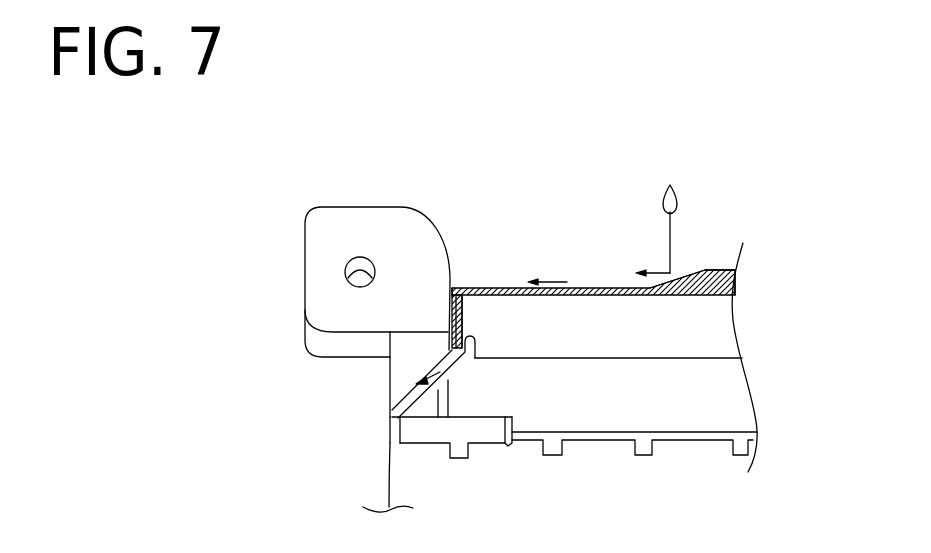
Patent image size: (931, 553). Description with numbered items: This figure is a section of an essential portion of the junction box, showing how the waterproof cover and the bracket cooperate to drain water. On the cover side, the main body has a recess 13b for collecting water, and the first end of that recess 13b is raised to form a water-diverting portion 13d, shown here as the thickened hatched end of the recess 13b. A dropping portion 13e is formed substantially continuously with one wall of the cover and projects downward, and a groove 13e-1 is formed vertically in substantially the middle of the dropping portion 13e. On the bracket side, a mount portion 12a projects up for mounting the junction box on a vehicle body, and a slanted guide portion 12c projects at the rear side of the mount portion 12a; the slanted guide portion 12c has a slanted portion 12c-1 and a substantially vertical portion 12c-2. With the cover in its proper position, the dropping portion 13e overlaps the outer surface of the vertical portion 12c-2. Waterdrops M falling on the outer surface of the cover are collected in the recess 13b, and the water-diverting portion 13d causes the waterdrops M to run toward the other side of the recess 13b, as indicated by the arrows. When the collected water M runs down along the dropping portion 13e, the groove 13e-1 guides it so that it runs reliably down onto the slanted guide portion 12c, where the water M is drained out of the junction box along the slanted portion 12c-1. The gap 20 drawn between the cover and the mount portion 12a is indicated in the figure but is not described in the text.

The mount portion 12a is at (303, 240).
The slanted guide portion 12c is at (427, 445).
The slanted portion 12c-1 is at (392, 388).
The vertical portion 12c-2 is at (475, 345).
The recess 13b is at (600, 287).
The water-diverting portion 13d is at (718, 268).
The dropping portion 13e is at (463, 313).
The groove 13e-1 is at (447, 317).
The gap 20 is at (485, 270).
The waterdrops M is at (676, 203).